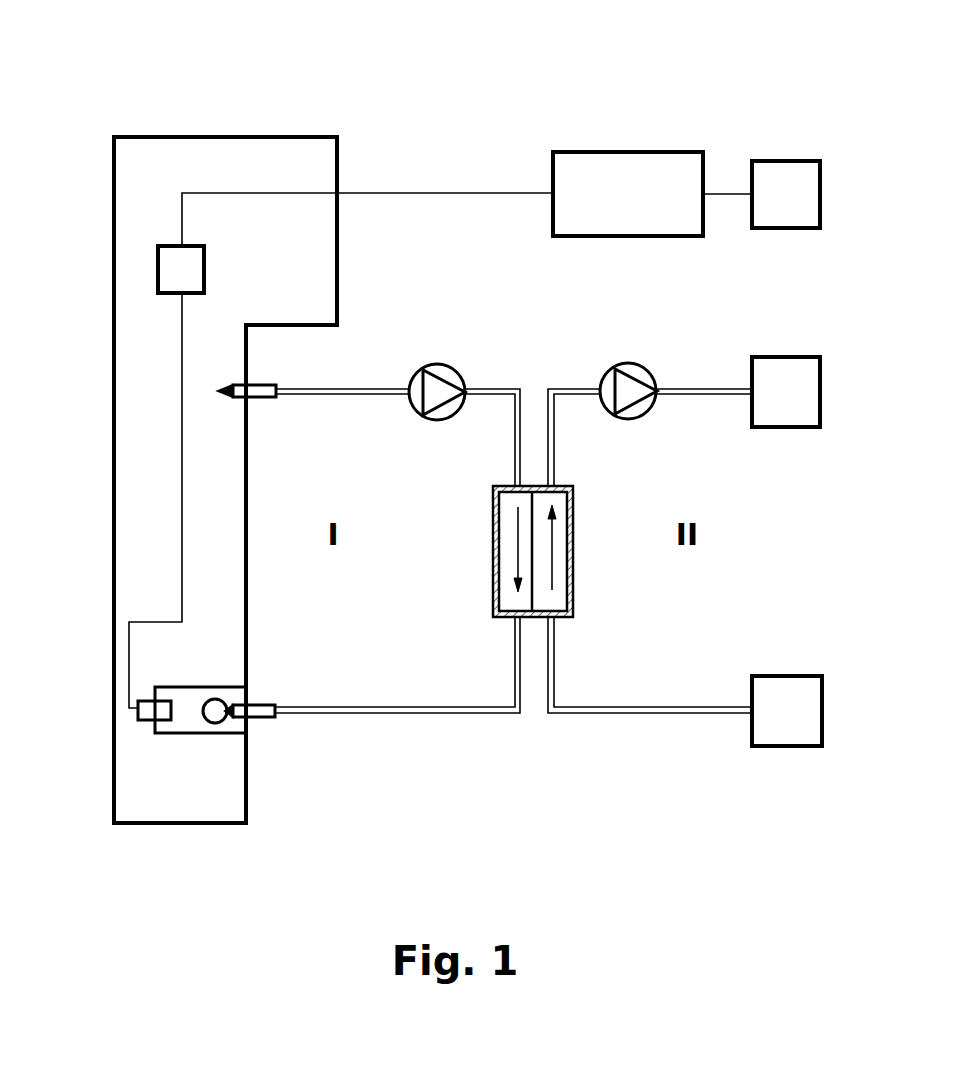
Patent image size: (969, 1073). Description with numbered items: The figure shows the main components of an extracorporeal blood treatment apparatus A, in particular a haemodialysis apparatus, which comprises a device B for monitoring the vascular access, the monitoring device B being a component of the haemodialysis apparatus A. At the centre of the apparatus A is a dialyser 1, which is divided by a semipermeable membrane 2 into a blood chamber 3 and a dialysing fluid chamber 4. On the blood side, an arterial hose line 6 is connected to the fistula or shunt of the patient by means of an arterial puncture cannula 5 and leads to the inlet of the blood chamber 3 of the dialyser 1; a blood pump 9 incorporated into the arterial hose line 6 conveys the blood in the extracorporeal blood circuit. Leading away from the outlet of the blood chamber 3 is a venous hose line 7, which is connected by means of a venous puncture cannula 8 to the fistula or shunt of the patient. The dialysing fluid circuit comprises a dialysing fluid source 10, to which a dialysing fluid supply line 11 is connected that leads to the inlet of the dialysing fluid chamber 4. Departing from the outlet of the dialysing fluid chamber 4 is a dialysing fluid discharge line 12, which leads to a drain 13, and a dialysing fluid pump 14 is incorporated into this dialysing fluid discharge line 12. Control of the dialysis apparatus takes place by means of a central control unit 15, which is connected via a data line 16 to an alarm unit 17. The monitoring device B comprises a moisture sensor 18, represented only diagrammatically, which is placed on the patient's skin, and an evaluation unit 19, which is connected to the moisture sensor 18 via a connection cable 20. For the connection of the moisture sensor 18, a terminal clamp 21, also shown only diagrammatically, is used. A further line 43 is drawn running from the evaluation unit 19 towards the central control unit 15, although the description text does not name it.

The heat exchanger 1 is at (573, 484).
The separating wall 2 is at (533, 542).
The first chamber 3 is at (500, 582).
The second chamber 4 is at (562, 580).
The temperature sensor 5 is at (258, 400).
The feed line of first circuit 6 is at (329, 400).
The return line of first circuit 7 is at (441, 717).
The temperature sensor 8 is at (262, 720).
The pump of first circuit 9 is at (448, 366).
The heat consumer 10 is at (783, 747).
The return line of second circuit 11 is at (650, 716).
The feed line of second circuit 12 is at (680, 398).
The heat source 13 is at (782, 356).
The pump of second circuit 14 is at (624, 420).
The control unit 15 is at (578, 238).
The signal line 16 is at (728, 192).
The operating unit 17 is at (786, 160).
The heat generator 18 is at (190, 723).
The valve 19 is at (158, 268).
The supply line 20 is at (182, 486).
The sensor 21 is at (143, 720).
The control line 43 is at (182, 222).
The heating circuit A is at (750, 596).
The heating appliance B is at (174, 116).